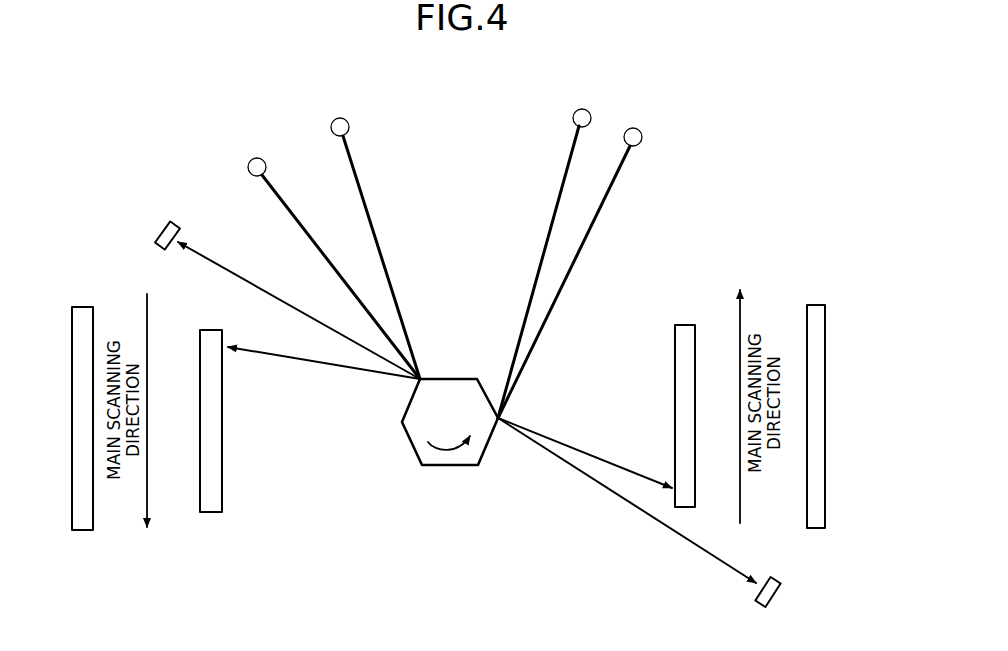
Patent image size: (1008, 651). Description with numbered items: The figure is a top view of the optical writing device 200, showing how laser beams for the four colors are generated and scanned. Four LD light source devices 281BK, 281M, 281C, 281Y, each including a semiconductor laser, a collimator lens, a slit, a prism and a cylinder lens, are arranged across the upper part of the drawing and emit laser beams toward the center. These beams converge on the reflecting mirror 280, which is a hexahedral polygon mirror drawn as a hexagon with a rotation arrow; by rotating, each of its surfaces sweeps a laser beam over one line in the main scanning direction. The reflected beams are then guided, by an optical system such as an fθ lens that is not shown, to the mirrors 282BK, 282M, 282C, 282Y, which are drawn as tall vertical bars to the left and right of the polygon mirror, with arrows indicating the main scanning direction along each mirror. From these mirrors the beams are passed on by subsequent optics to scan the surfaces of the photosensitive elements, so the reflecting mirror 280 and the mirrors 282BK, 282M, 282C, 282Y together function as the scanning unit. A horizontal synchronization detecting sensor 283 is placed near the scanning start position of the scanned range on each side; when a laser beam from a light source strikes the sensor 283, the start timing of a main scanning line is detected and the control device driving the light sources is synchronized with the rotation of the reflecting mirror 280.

The optical writing device 200 is at (73, 124).
The reflecting mirror 280 is at (452, 467).
The LD light source device 281C is at (254, 158).
The LD light source device 281Y is at (348, 120).
The LD light source device 281M is at (586, 110).
The LD light source device 281BK is at (642, 132).
The mirror 282Y is at (80, 530).
The mirror 282C is at (212, 512).
The mirror 282M is at (688, 325).
The mirror 282BK is at (817, 305).
The horizontal synchronization detecting sensor 283 is at (158, 222).